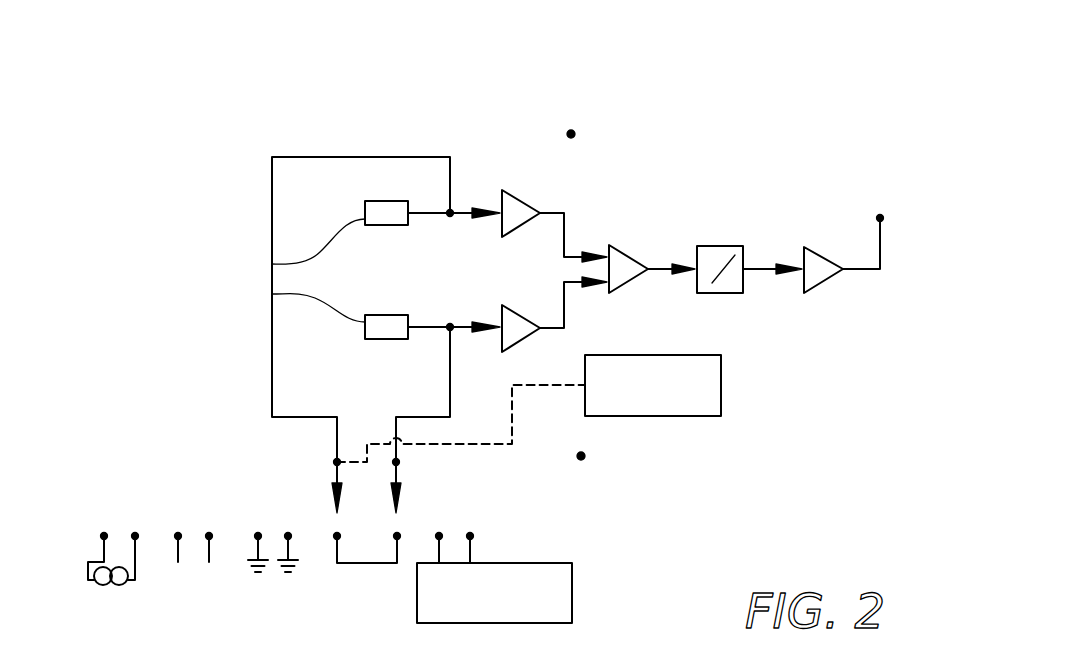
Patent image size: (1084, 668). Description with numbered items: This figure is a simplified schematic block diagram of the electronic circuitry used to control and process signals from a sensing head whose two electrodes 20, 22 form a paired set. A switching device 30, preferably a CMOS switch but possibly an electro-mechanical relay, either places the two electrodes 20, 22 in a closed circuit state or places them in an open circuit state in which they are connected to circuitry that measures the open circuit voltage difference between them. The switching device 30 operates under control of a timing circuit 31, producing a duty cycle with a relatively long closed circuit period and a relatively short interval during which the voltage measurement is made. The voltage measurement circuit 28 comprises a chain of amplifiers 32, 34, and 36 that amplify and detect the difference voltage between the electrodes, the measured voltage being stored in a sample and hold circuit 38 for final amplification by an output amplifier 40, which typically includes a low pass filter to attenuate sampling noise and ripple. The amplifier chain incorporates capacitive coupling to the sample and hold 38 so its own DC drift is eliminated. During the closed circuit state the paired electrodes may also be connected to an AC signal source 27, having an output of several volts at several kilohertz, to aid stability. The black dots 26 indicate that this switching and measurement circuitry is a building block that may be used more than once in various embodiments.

The electrode 20 is at (272, 264).
The electrode 22 is at (272, 294).
The black dots 26 is at (571, 134).
The AC signal source 27 is at (121, 585).
The voltage measurement circuit 28 is at (516, 336).
The switching device 30 is at (480, 504).
The timing circuit 31 is at (721, 368).
The amplifier 32 is at (518, 203).
The amplifier 34 is at (520, 315).
The amplifier 36 is at (628, 252).
The sample and hold circuit 38 is at (735, 293).
The output amplifier 40 is at (833, 277).